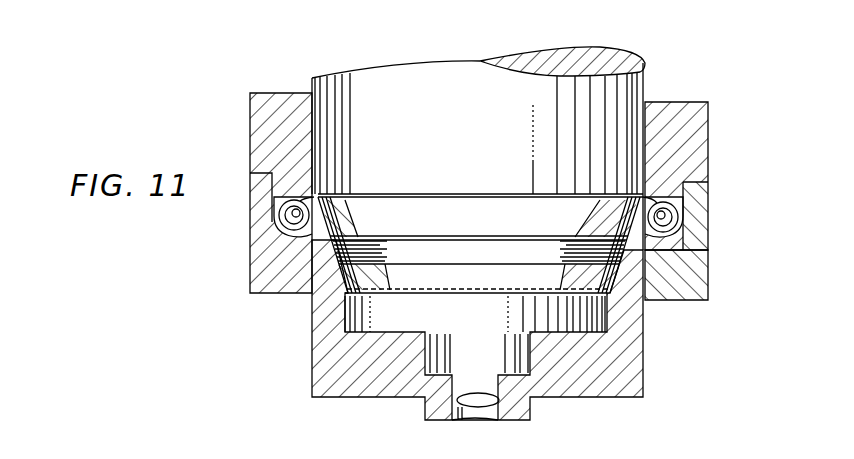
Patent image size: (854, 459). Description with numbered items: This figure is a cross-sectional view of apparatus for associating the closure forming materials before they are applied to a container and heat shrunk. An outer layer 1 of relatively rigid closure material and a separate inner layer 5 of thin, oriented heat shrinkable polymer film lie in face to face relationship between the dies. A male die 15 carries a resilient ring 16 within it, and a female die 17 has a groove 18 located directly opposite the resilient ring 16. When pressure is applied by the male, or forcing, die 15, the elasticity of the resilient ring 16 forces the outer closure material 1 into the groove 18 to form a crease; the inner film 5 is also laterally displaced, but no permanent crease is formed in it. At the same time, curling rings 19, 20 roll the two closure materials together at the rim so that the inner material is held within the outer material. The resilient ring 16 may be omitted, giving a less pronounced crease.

The outer layer of closure material 1 is at (318, 232).
The inner layer of closure material 5 is at (420, 297).
The male die 15 is at (395, 60).
The resilient ring 16 is at (545, 255).
The female die 17 is at (643, 318).
The groove 18 is at (707, 252).
The curling ring 19 is at (698, 127).
The curling ring 20 is at (708, 210).